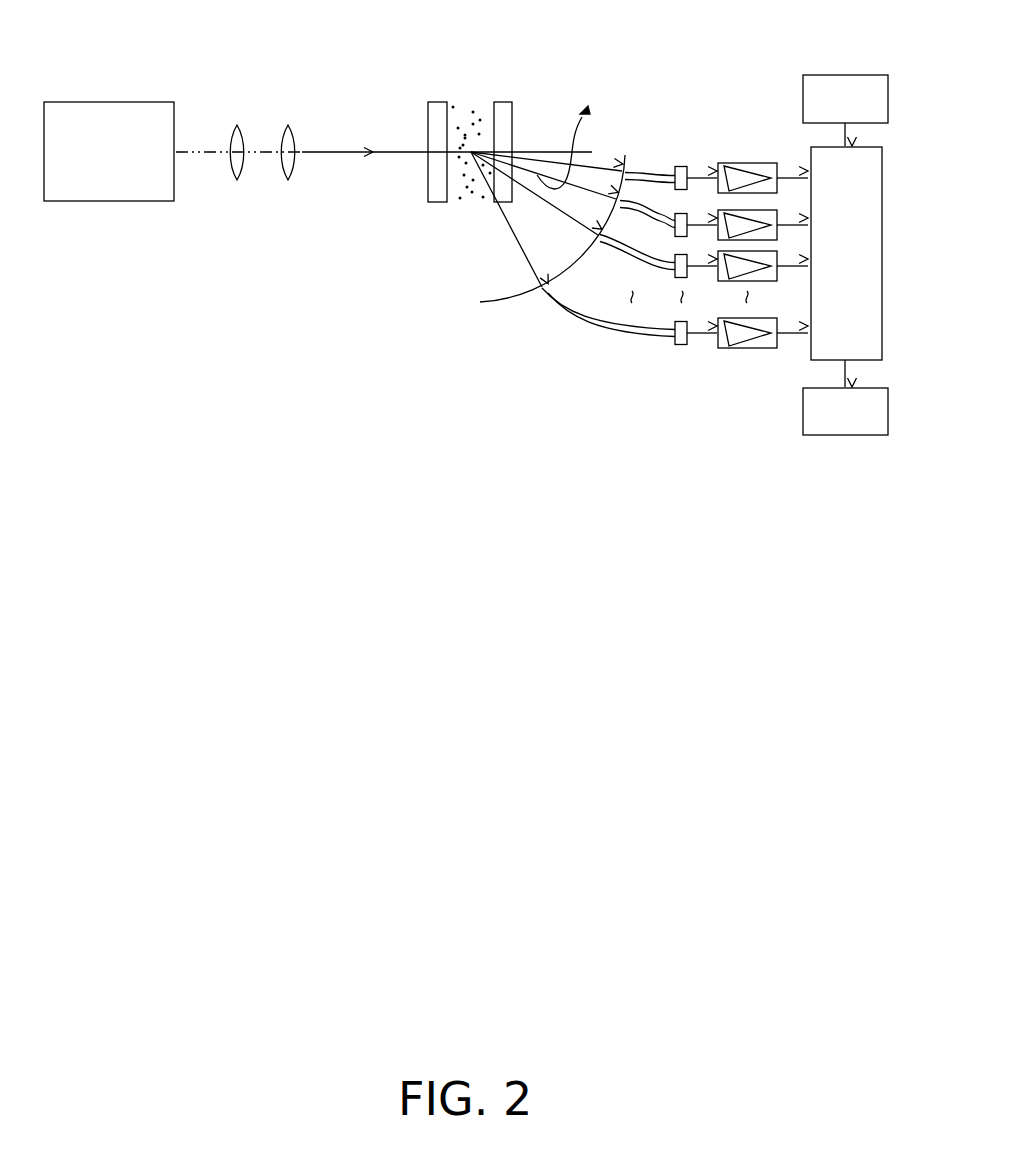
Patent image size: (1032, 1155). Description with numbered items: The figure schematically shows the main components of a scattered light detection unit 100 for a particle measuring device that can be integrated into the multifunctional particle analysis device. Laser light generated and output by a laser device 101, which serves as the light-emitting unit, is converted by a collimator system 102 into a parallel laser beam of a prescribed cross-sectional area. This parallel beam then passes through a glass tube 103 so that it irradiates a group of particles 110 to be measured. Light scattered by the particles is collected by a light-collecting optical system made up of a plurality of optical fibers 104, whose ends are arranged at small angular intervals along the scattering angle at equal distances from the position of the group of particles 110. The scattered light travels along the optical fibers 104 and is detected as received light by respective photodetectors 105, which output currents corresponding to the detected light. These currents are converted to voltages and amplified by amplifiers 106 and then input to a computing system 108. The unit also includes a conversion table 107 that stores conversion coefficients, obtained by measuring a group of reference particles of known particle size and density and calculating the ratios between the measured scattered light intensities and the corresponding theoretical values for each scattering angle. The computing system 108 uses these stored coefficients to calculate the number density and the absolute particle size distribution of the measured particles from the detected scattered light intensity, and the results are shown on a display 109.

The scattered light detection unit 100 is at (428, 474).
The laser device 101 is at (109, 151).
The collimator system 102 is at (225, 184).
The glass tube 103 is at (438, 102).
The group of particles 110 is at (447, 207).
The optical fibers 104 is at (643, 172).
The photodetectors 105 is at (680, 167).
The amplifiers 106 is at (742, 163).
The conversion table 107 is at (845, 99).
The computing system 108 is at (846, 253).
The display 109 is at (845, 411).